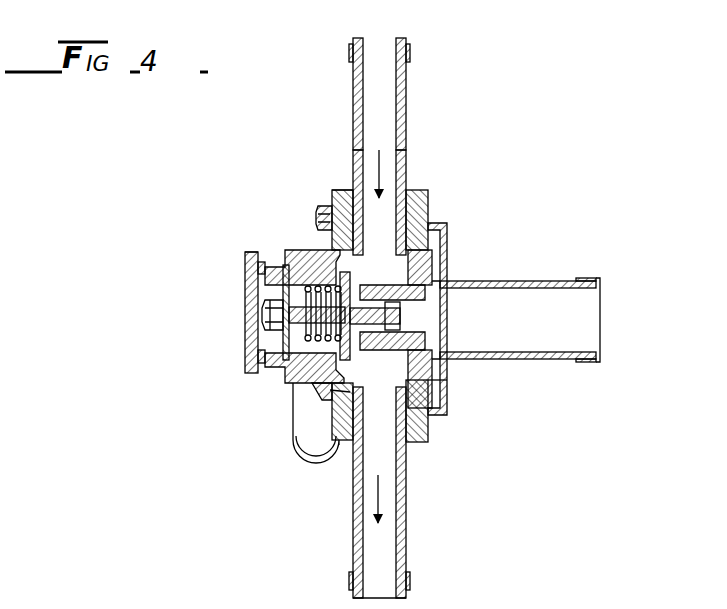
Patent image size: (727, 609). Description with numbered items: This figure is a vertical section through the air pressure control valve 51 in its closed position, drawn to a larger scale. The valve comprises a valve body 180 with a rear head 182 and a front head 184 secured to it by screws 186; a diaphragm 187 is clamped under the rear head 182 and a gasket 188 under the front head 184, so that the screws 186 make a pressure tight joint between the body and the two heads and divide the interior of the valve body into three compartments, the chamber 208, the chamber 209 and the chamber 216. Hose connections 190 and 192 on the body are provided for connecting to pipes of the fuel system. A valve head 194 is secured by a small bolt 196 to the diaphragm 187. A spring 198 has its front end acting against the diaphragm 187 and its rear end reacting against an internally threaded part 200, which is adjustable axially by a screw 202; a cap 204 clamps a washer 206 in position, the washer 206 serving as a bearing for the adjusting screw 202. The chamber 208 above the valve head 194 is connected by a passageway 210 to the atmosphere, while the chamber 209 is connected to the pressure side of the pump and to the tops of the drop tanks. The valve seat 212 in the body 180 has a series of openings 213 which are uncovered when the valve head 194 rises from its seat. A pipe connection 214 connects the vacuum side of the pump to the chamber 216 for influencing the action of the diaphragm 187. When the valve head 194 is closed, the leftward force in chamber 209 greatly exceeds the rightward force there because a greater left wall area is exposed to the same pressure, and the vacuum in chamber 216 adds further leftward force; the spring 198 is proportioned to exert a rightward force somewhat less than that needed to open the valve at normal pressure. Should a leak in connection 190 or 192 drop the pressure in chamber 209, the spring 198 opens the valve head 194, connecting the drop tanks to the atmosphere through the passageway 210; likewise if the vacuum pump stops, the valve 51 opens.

The air pressure control valve 51 is at (465, 222).
The valve body 180 is at (404, 195).
The rear head 182 is at (336, 194).
The front head 184 is at (428, 218).
The screws 186 is at (318, 214).
The diaphragm 187 is at (350, 190).
The gasket 188 is at (420, 445).
The hose connection 190 is at (406, 97).
The hose connection 192 is at (405, 500).
The valve head 194 is at (446, 268).
The small bolt 196 is at (403, 309).
The spring 198 is at (290, 383).
The internally threaded part 200 is at (262, 345).
The adjusting screw 202 is at (278, 322).
The cap 204 is at (248, 270).
The washer 206 is at (300, 290).
The chamber 208 is at (447, 392).
The chamber 209 is at (330, 392).
The passageway 210 is at (600, 333).
The valve seat 212 is at (446, 248).
The openings 213 is at (398, 262).
The pipe connection 214 is at (303, 446).
The chamber 216 is at (318, 390).